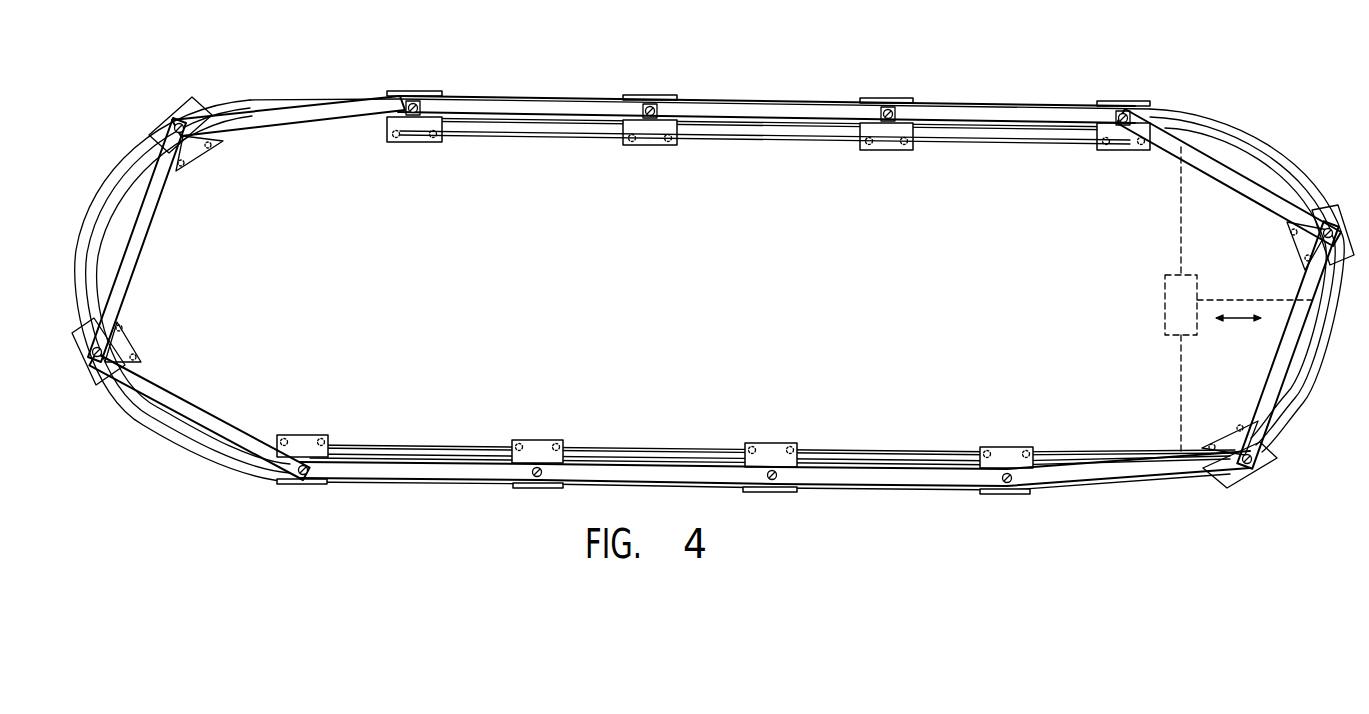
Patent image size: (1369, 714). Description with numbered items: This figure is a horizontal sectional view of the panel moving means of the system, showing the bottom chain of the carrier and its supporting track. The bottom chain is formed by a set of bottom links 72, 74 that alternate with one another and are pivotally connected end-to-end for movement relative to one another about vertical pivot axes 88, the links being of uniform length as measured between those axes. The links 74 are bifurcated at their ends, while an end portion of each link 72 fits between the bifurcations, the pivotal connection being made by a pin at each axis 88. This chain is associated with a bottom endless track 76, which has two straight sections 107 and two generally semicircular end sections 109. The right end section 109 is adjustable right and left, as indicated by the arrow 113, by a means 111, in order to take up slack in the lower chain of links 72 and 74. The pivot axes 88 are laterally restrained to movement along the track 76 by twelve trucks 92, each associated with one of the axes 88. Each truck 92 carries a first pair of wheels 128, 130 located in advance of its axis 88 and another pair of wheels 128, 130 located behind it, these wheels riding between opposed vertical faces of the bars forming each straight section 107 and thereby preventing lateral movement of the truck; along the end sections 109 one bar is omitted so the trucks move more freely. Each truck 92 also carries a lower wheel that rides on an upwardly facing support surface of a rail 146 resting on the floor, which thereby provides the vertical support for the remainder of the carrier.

The bottom link 72 is at (124, 287).
The bottom link 74 is at (295, 120).
The bottom endless track 76 is at (895, 457).
The vertical pivot axis 88 is at (418, 114).
The bottom truck 92 is at (191, 104).
The straight section 107 is at (586, 133).
The semicircular end section 109 is at (122, 223).
The adjusting means 111 is at (1165, 300).
The arrow 113 is at (1239, 319).
The wheel 128 is at (857, 126).
The wheel 130 is at (897, 146).
The rail 146 is at (1310, 408).